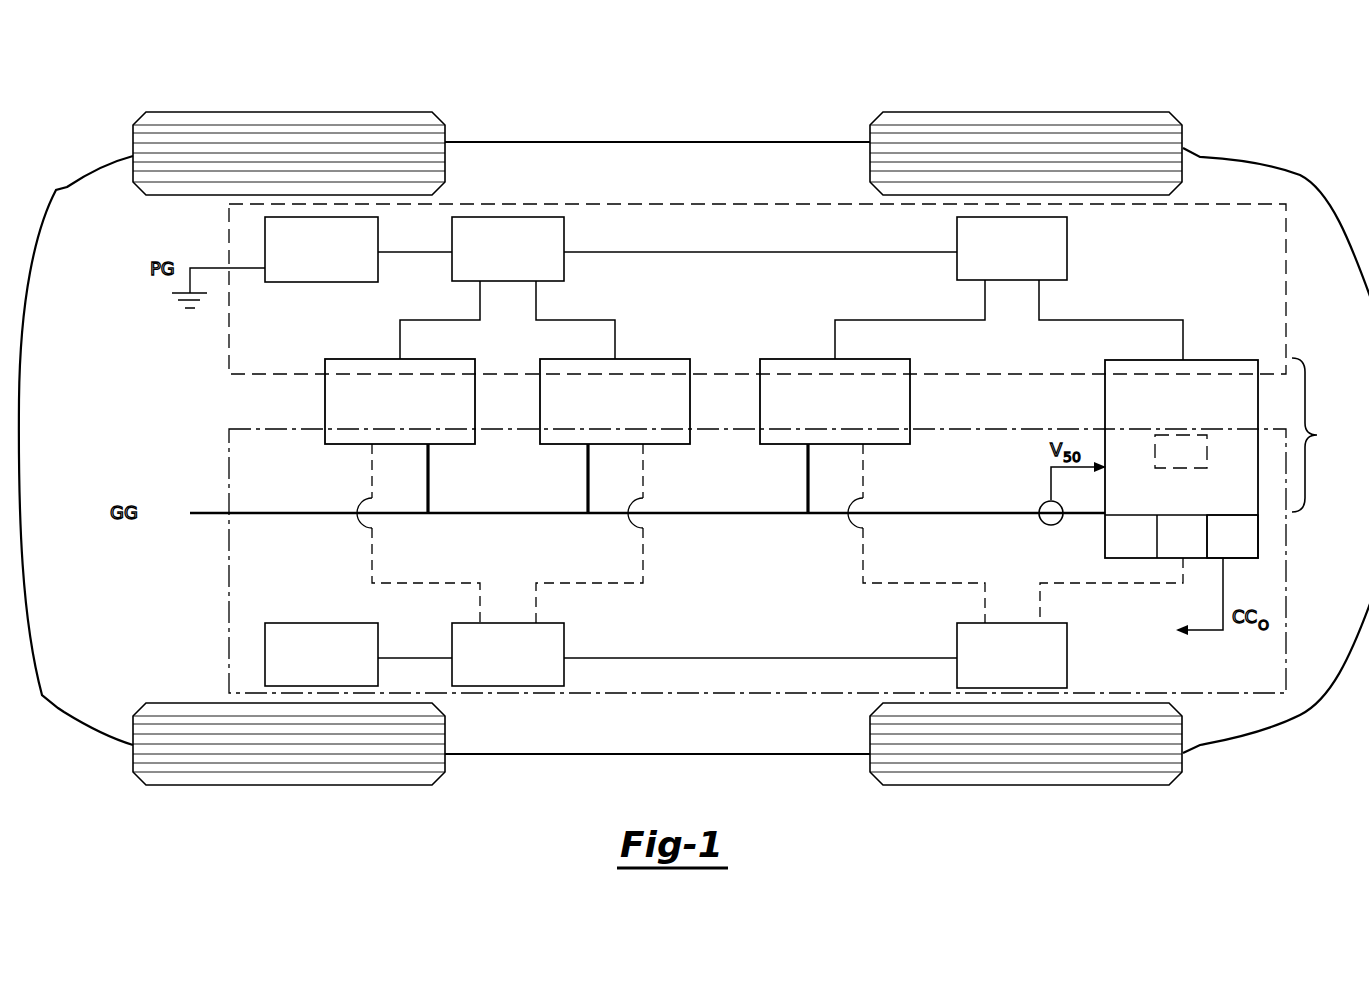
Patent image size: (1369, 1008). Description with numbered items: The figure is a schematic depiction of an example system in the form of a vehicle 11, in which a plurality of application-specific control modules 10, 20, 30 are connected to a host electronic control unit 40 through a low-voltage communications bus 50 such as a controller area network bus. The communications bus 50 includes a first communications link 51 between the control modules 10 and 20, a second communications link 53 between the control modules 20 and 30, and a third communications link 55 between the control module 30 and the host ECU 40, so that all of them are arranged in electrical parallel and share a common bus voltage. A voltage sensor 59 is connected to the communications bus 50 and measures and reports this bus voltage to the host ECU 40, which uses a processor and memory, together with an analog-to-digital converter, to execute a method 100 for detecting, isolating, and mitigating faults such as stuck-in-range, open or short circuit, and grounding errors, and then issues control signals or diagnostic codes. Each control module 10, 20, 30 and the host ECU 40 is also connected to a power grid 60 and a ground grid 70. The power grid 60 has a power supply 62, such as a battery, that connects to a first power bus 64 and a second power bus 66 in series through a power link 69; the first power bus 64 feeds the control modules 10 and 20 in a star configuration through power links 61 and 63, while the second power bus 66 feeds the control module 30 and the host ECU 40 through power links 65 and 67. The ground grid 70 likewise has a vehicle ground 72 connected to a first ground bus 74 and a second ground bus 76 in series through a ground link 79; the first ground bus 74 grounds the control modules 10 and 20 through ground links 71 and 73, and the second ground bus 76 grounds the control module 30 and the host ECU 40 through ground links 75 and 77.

The vehicle 11 is at (1256, 99).
The power grid 60 is at (231, 396).
The ground grid 70 is at (231, 593).
The power supply 62 is at (334, 267).
The first power bus 64 is at (520, 267).
The second power bus 66 is at (1025, 267).
The power link 69 is at (733, 253).
The power link 61 is at (400, 338).
The power link 63 is at (615, 340).
The power link 65 is at (835, 340).
The power link 67 is at (1183, 340).
The control module 10 is at (416, 417).
The control module 20 is at (629, 417).
The control module 30 is at (850, 417).
The host electronic control unit 40 is at (1194, 503).
The communications bus 50 is at (1319, 435).
The method 100 is at (1218, 572).
The voltage sensor 59 is at (1048, 526).
The first communications link 51 is at (511, 514).
The second communications link 53 is at (760, 514).
The third communications link 55 is at (963, 514).
The ground link 71 is at (372, 562).
The ground link 73 is at (650, 563).
The ground link 75 is at (862, 562).
The ground link 77 is at (1118, 584).
The ground link 79 is at (762, 657).
The vehicle ground 72 is at (334, 671).
The first ground bus 74 is at (520, 674).
The second ground bus 76 is at (1025, 674).